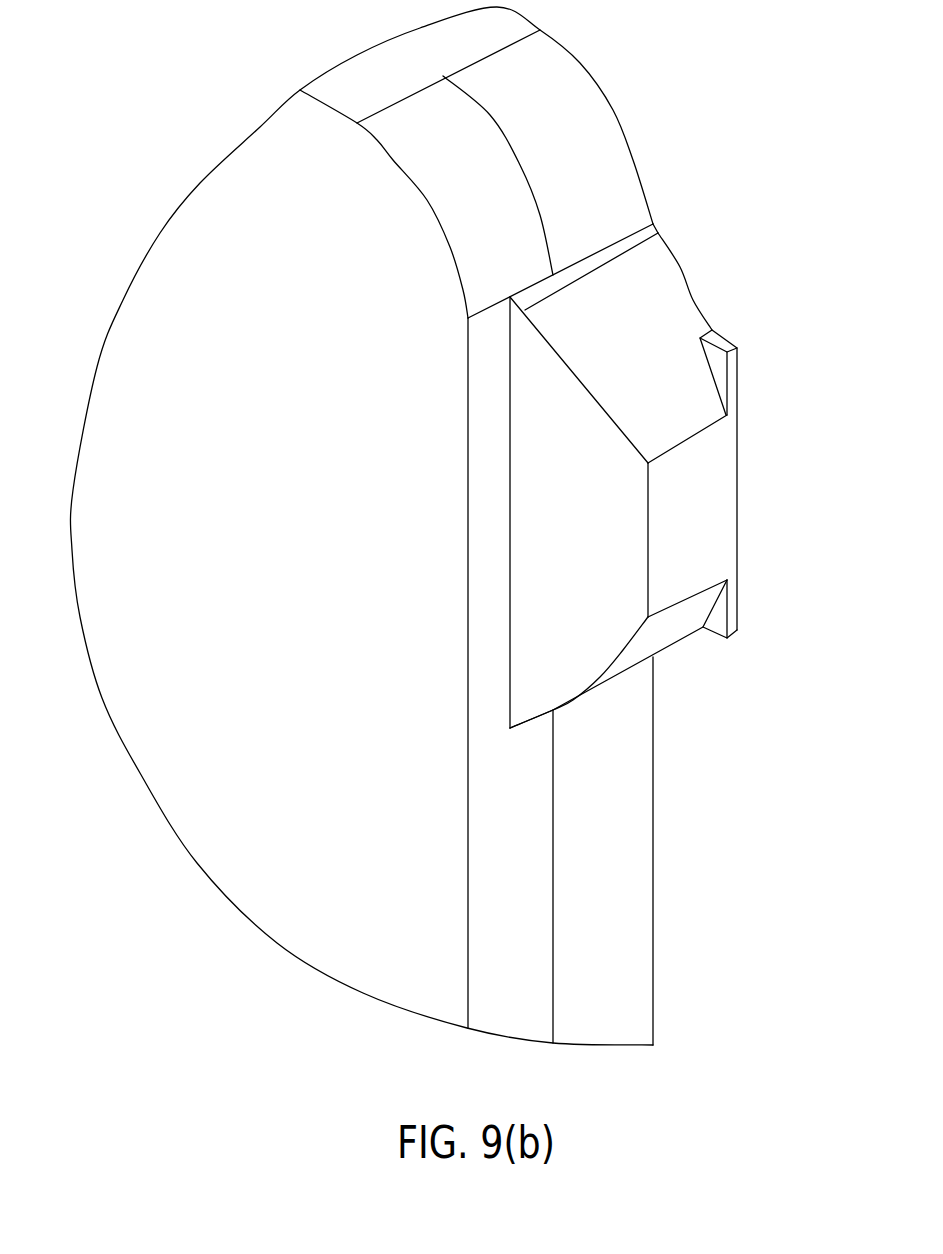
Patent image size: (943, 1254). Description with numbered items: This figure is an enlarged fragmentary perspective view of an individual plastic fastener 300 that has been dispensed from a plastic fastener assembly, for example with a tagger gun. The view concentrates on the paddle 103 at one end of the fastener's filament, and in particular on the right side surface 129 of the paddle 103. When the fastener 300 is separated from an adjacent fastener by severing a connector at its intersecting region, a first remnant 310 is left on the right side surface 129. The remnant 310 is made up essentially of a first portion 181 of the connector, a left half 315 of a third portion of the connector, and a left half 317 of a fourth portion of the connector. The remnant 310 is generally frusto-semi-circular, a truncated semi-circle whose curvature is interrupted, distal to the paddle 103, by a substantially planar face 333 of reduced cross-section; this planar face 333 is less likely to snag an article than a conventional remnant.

The individual plastic fastener 300 is at (93, 170).
The paddle 103 is at (247, 504).
The right side surface 129 is at (618, 905).
The first portion of the connector 181 is at (655, 362).
The substantially planar face 333 is at (713, 527).
The first remnant 310 is at (760, 498).
The left half of the third portion of the connector 315 is at (738, 348).
The left half of the fourth portion of the connector 317 is at (737, 630).